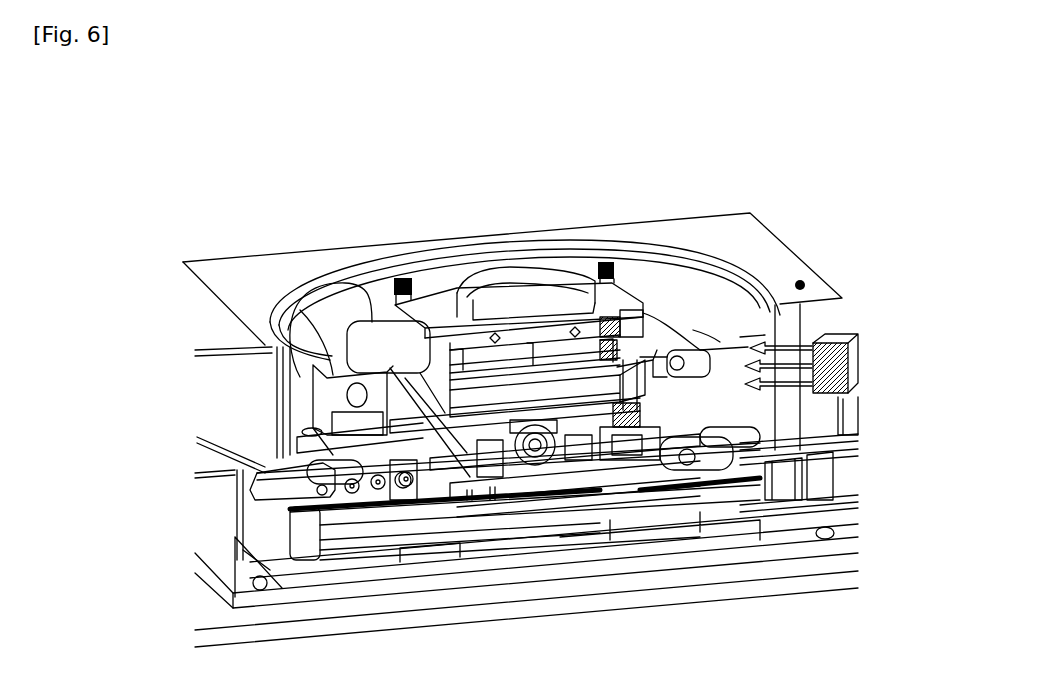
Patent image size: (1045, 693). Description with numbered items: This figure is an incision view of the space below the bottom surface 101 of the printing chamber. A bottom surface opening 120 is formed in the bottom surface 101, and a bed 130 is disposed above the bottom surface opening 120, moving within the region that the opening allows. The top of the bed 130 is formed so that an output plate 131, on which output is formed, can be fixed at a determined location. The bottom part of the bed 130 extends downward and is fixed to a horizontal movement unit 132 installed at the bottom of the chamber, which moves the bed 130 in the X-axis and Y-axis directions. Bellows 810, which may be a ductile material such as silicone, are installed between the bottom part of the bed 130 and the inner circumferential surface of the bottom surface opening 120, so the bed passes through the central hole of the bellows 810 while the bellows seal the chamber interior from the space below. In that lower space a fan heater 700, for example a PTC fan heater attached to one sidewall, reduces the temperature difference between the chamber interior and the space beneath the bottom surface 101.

The bottom surface 101 is at (745, 250).
The bottom surface opening 120 is at (457, 220).
The bed 130 is at (617, 290).
The output plate 131 is at (517, 300).
The horizontal movement unit 132 is at (533, 490).
The fan heater 700 is at (842, 343).
The bellows 810 is at (362, 307).